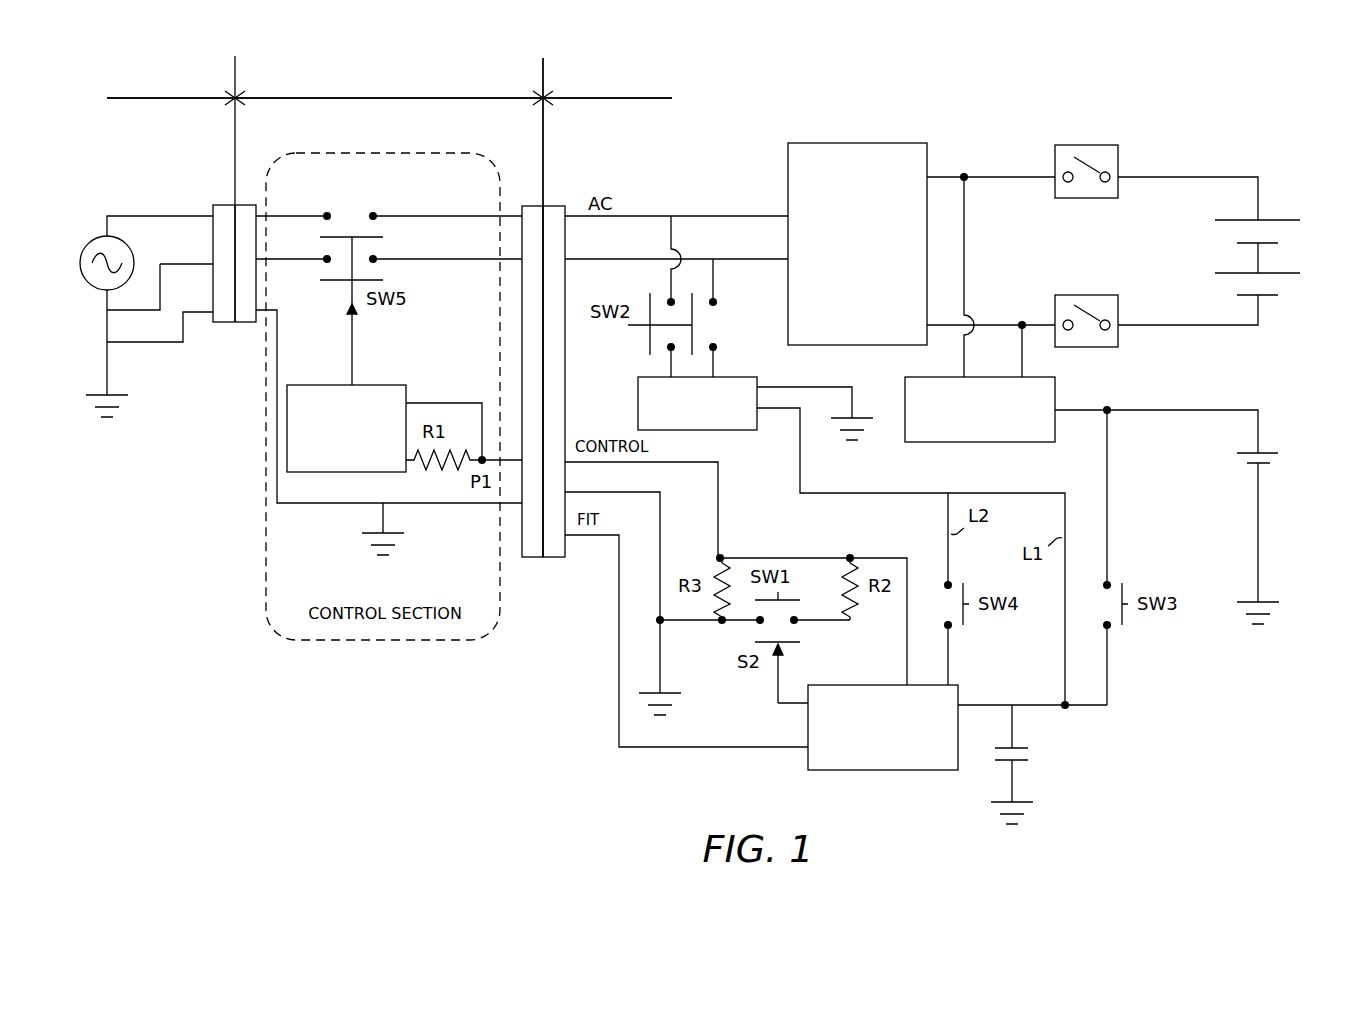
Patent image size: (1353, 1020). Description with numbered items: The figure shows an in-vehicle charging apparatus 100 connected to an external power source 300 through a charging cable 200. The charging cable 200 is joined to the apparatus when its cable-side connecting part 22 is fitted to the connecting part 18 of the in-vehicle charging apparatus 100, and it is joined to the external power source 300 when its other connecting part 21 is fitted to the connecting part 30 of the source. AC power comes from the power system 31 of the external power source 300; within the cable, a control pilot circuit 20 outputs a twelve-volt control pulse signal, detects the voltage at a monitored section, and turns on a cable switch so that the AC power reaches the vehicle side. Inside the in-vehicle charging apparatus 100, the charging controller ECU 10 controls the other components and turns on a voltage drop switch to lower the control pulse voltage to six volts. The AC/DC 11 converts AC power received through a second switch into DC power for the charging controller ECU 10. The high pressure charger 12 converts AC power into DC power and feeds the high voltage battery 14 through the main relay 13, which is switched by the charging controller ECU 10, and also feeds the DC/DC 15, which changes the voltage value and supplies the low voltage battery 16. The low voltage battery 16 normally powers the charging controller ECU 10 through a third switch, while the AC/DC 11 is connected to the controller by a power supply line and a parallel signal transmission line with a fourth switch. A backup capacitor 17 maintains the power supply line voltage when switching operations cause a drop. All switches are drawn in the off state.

The external power source 300 is at (167, 64).
The charging cable 200 is at (389, 84).
The in-vehicle charging apparatus 100 is at (637, 66).
The power system 31 is at (90, 238).
The connecting part 30 is at (216, 204).
The connecting part 21 is at (244, 325).
The connecting part 22 is at (532, 204).
The connecting part 18 is at (555, 204).
The control pilot circuit 20 is at (378, 384).
The AC/DC 11 is at (746, 376).
The high pressure charger 12 is at (855, 142).
The main relay 13 is at (1091, 144).
The high voltage battery 14 is at (1285, 218).
The DC/DC 15 is at (1058, 392).
The low voltage battery 16 is at (1268, 452).
The charging controller ECU 10 is at (870, 684).
The backup capacitor 17 is at (1032, 756).